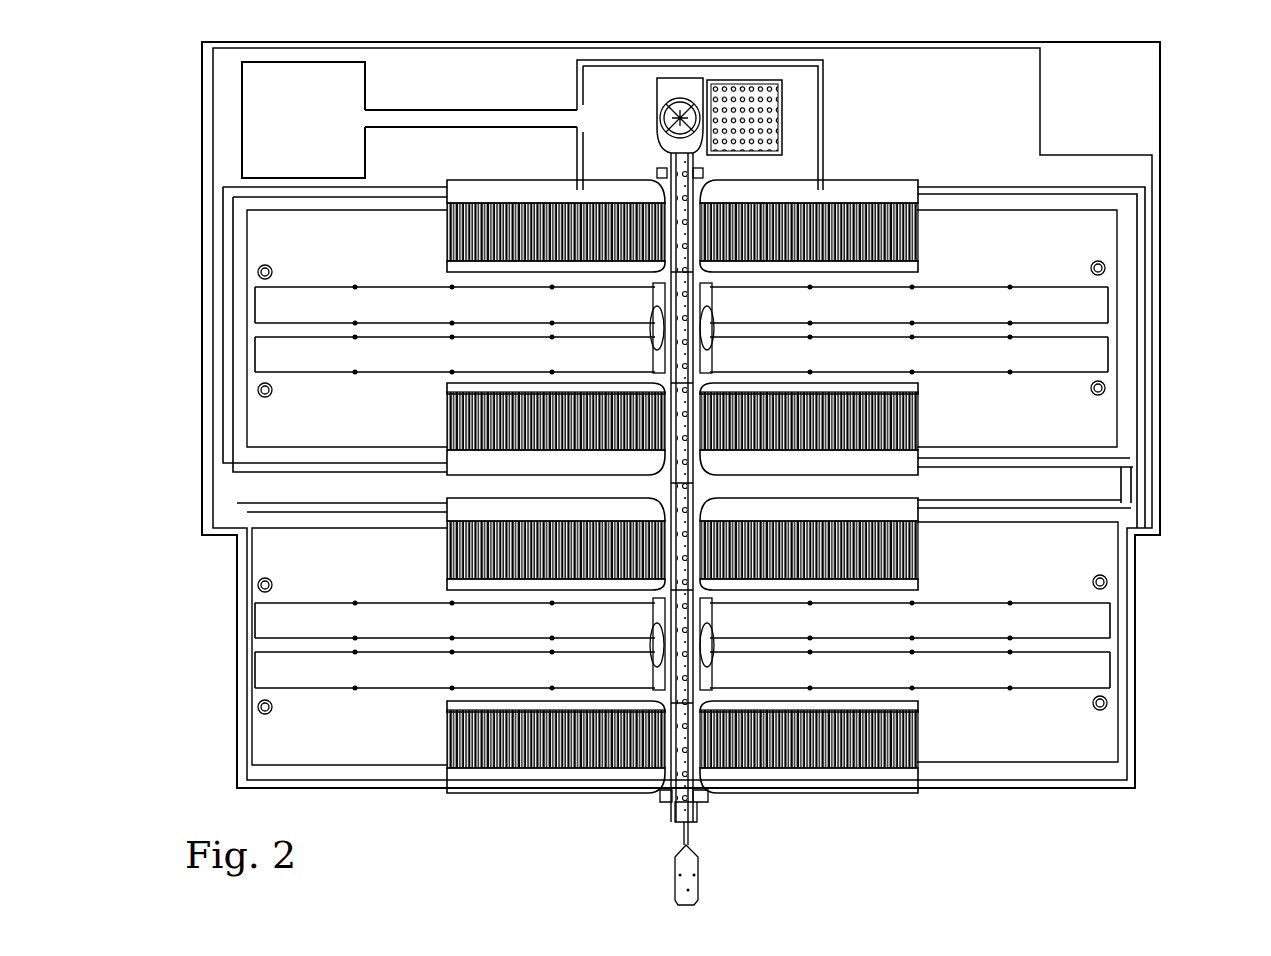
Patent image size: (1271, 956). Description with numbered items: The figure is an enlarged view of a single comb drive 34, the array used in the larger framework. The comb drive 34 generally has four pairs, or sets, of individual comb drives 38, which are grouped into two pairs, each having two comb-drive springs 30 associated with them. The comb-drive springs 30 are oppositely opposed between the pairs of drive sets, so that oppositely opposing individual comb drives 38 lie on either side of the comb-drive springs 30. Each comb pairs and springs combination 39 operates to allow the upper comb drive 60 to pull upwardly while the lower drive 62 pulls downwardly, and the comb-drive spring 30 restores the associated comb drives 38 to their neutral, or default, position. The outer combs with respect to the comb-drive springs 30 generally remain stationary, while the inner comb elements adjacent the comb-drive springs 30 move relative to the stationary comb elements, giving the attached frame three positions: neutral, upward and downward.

The comb-drive spring 30 is at (964, 275).
The comb drive 34 is at (193, 383).
The individual comb drive 38 is at (916, 568).
The comb pairs and springs combination 39 is at (1180, 177).
The upper comb drive 60 is at (440, 250).
The lower drive 62 is at (440, 432).